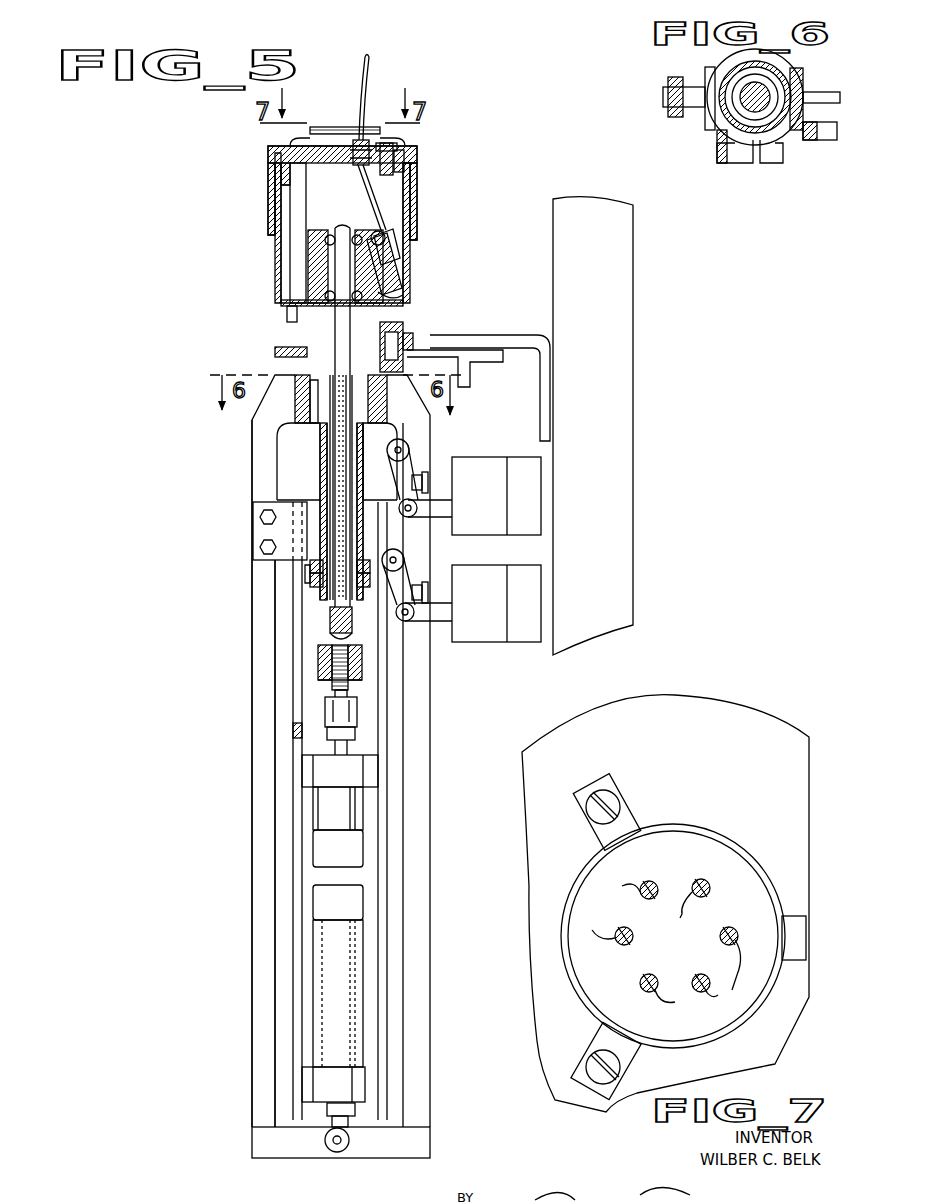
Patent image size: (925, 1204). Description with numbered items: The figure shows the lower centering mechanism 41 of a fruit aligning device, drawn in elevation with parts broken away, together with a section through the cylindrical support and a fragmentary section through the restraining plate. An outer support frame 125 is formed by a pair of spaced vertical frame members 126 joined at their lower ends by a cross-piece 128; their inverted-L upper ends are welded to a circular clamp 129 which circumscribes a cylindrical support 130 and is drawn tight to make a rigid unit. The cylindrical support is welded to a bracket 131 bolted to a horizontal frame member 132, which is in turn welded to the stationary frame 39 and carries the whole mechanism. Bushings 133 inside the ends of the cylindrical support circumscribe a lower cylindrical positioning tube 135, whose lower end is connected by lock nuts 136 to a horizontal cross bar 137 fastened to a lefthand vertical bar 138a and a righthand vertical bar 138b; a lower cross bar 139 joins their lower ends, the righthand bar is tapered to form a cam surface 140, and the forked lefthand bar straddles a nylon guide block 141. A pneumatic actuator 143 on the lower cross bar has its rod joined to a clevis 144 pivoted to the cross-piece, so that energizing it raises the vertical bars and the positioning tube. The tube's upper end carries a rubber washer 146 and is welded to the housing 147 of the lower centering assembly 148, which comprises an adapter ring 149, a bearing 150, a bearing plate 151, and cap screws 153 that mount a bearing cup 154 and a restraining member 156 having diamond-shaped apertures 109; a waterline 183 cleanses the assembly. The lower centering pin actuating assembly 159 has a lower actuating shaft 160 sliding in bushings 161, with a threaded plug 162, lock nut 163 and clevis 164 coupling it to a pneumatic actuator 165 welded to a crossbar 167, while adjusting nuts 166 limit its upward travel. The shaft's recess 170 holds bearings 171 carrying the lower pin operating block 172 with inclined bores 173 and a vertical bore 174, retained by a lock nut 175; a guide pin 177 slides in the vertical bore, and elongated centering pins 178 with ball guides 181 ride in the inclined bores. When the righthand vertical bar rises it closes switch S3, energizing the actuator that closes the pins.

In FIG. 5, the stationary frame 39 is at (636, 264).
In FIG. 5, the lower centering mechanism 41 is at (165, 355).
In FIG. 5, the diamond-shaped apertures 109 is at (358, 138).
In FIG. 7, the diamond-shaped apertures 109 is at (676, 935).
In FIG. 5, the outer support frame 125 is at (250, 980).
In FIG. 5, the vertical frame members 126 is at (262, 1010).
In FIG. 6, the vertical frame members 126 is at (665, 98).
In FIG. 5, the cross-piece 128 is at (262, 1148).
In FIG. 5, the circular clamp 129 is at (298, 412).
In FIG. 6, the circular clamp 129 is at (725, 128).
In FIG. 5, the cylindrical support 130 is at (292, 355).
In FIG. 6, the cylindrical support 130 is at (727, 115).
In FIG. 5, the bracket 131 is at (475, 357).
In FIG. 5, the horizontal frame member 132 is at (433, 340).
In FIG. 5, the bushings 133 is at (312, 440).
In FIG. 5, the lower cylindrical positioning tube 135 is at (320, 487).
In FIG. 6, the lower cylindrical positioning tube 135 is at (740, 73).
In FIG. 5, the lock nuts 136 is at (312, 566).
In FIG. 5, the horizontal cross bar 137 is at (315, 580).
In FIG. 5, the lefthand vertical bar 138a is at (296, 672).
In FIG. 5, the righthand vertical bar 138b is at (385, 737).
In FIG. 5, the lower cross bar 139 is at (352, 1092).
In FIG. 5, the cam surface 140 is at (402, 566).
In FIG. 5, the nylon guide block 141 is at (258, 538).
In FIG. 5, the pneumatic actuator 143 is at (320, 940).
In FIG. 5, the clevis 144 is at (346, 1155).
In FIG. 5, the rubber washer 146 is at (403, 306).
In FIG. 5, the housing 147 is at (300, 300).
In FIG. 5, the lower centering assembly 148 is at (266, 253).
In FIG. 5, the adapter ring 149 is at (283, 175).
In FIG. 5, the bearing 150 is at (406, 160).
In FIG. 5, the bearing plate 151 is at (290, 150).
In FIG. 5, the cap screws 153 is at (396, 142).
In FIG. 7, the cap screws 153 is at (618, 805).
In FIG. 5, the bearing cup 154 is at (416, 195).
In FIG. 7, the bearing cup 154 is at (705, 697).
In FIG. 5, the restraining member 156 is at (310, 131).
In FIG. 7, the restraining member 156 is at (660, 832).
In FIG. 5, the lower centering pin actuating assembly 159 is at (372, 478).
In FIG. 5, the lower actuating shaft 160 is at (330, 505).
In FIG. 6, the lower actuating shaft 160 is at (767, 115).
In FIG. 5, the bushings 161 is at (322, 325).
In FIG. 5, the threaded plug 162 is at (332, 678).
In FIG. 5, the lock nut 163 is at (362, 685).
In FIG. 5, the clevis 164 is at (352, 720).
In FIG. 5, the pneumatic actuator 165 is at (320, 810).
In FIG. 5, the adjusting nuts 166 is at (362, 670).
In FIG. 5, the crossbar 167 is at (305, 773).
In FIG. 5, the recess 170 is at (395, 283).
In FIG. 5, the bearings 171 is at (330, 250).
In FIG. 5, the lower pin operating block 172 is at (398, 246).
In FIG. 5, the inclined bores 173 is at (398, 262).
In FIG. 5, the vertical bore 174 is at (298, 238).
In FIG. 5, the lock nut 175 is at (368, 224).
In FIG. 5, the guide pin 177 is at (296, 205).
In FIG. 5, the elongated centering pins 178 is at (372, 63).
In FIG. 7, the elongated centering pins 178 is at (640, 890).
In FIG. 5, the ball guides 181 is at (388, 232).
In FIG. 5, the waterline 183 is at (287, 313).
In FIG. 5, the switch S3 is at (488, 493).